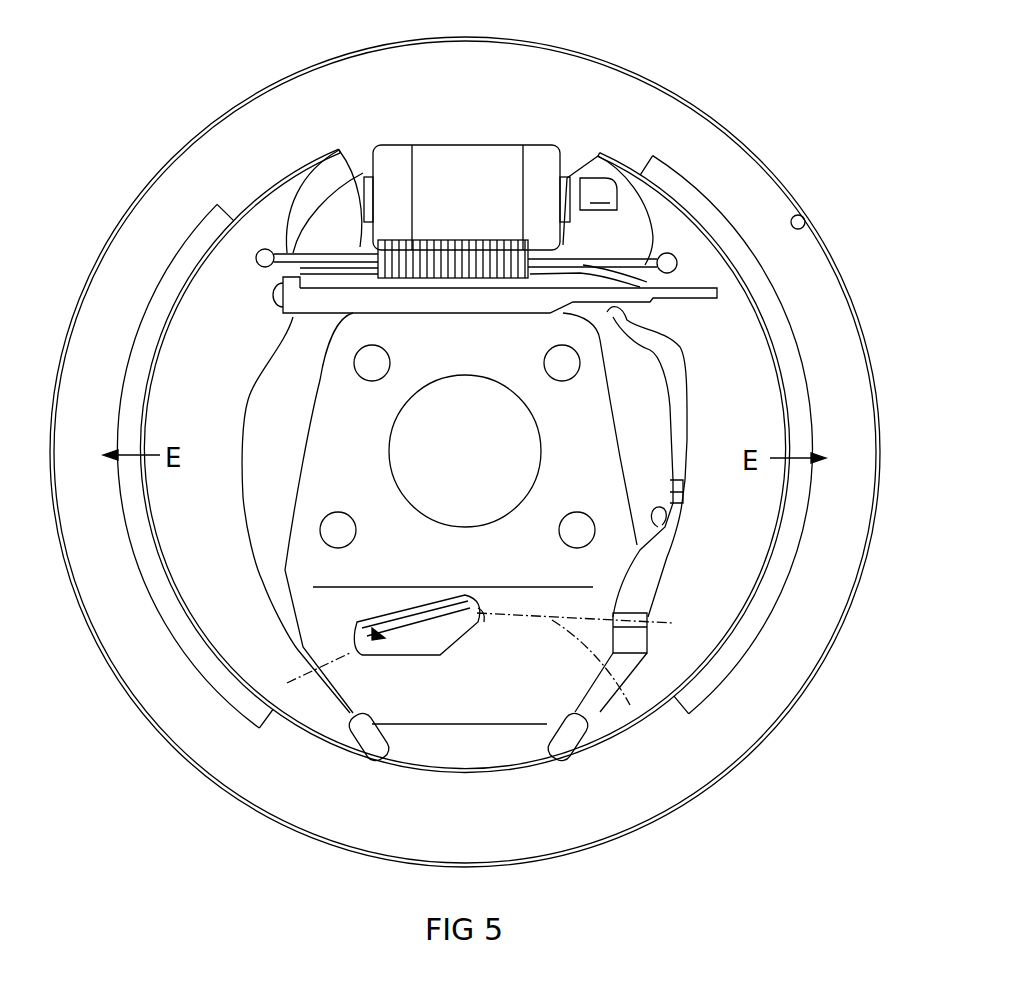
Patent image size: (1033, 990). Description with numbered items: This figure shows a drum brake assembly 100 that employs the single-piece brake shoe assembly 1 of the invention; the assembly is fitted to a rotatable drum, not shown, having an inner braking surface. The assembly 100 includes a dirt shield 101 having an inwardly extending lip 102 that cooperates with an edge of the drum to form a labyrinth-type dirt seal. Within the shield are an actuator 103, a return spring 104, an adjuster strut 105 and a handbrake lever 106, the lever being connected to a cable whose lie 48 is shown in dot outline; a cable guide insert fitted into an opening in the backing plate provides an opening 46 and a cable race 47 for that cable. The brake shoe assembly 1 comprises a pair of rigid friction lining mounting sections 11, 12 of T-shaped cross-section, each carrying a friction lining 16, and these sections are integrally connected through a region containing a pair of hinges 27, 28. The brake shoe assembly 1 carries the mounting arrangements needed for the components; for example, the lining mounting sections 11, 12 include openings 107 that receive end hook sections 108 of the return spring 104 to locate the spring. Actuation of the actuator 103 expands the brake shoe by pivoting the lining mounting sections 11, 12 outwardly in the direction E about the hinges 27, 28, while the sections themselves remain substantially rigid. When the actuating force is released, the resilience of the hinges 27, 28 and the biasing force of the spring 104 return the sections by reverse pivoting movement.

The drum brake assembly 100 is at (132, 110).
The brake shoe assembly 1 is at (356, 772).
The lining mounting section 11 is at (180, 341).
The lining mounting section 12 is at (730, 360).
The friction lining 16 is at (710, 223).
The hinge 27 is at (370, 737).
The hinge 28 is at (555, 738).
The opening 46 is at (352, 633).
The cable race 47 is at (483, 613).
The lie of the cable 48 is at (605, 690).
The dirt shield 101 is at (740, 140).
The inwardly extending lip 102 is at (805, 222).
The actuator 103 is at (505, 157).
The return spring 104 is at (440, 253).
The adjuster strut 105 is at (363, 300).
The handbrake lever 106 is at (660, 527).
The opening 107 is at (256, 258).
The end hook section 108 is at (285, 250).